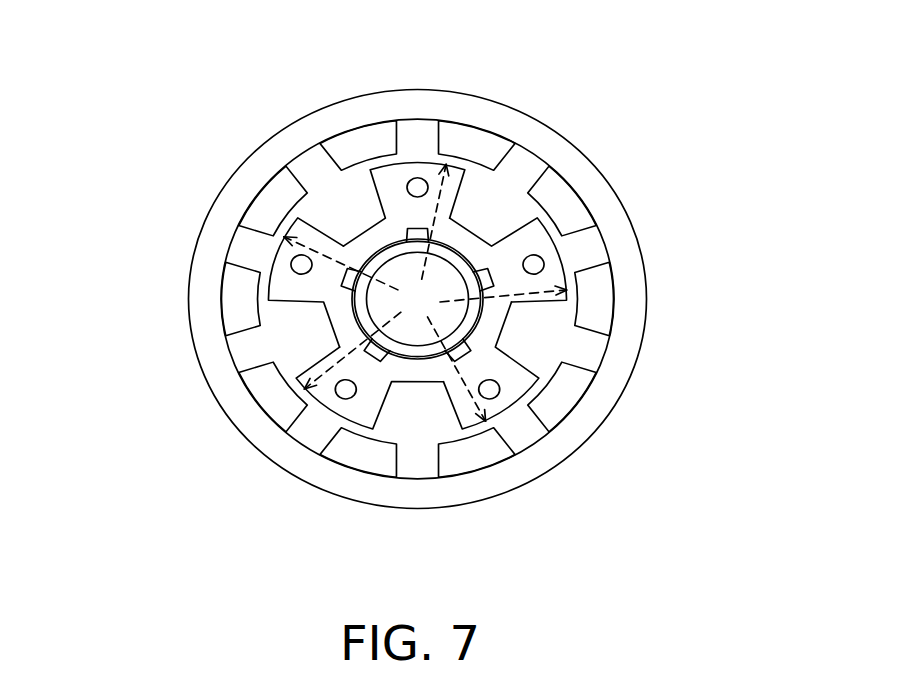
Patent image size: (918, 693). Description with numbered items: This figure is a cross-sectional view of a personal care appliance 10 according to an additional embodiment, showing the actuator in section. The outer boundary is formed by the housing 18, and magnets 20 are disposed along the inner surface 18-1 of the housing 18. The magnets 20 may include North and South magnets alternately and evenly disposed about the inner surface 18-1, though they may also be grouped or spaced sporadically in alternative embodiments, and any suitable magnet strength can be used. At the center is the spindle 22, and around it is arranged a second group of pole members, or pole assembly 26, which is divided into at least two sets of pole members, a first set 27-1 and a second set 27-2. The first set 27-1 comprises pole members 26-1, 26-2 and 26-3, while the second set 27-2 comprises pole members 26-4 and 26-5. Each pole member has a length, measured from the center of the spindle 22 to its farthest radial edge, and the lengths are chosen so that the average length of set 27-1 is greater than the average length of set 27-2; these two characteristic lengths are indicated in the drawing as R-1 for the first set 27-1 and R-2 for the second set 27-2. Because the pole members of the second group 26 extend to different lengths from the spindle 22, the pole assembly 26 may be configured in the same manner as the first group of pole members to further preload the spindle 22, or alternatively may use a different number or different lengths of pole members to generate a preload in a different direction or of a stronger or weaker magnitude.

The electric motor assembly 10 is at (729, 131).
The housing 18 is at (215, 392).
The inner surface of the housing 18-1 is at (221, 351).
The magnets 20 is at (358, 137).
The spindle 22 is at (436, 311).
The second group of pole members 26 is at (418, 445).
The pole member 26-1 is at (415, 163).
The pole member 26-2 is at (557, 254).
The pole member 26-3 is at (503, 408).
The pole member 26-4 is at (325, 405).
The pole member 26-5 is at (275, 250).
The first set of pole members 27-1 is at (597, 272).
The second set of pole members 27-2 is at (227, 378).
The first radius R-1 is at (438, 190).
The second radius R-2 is at (341, 361).